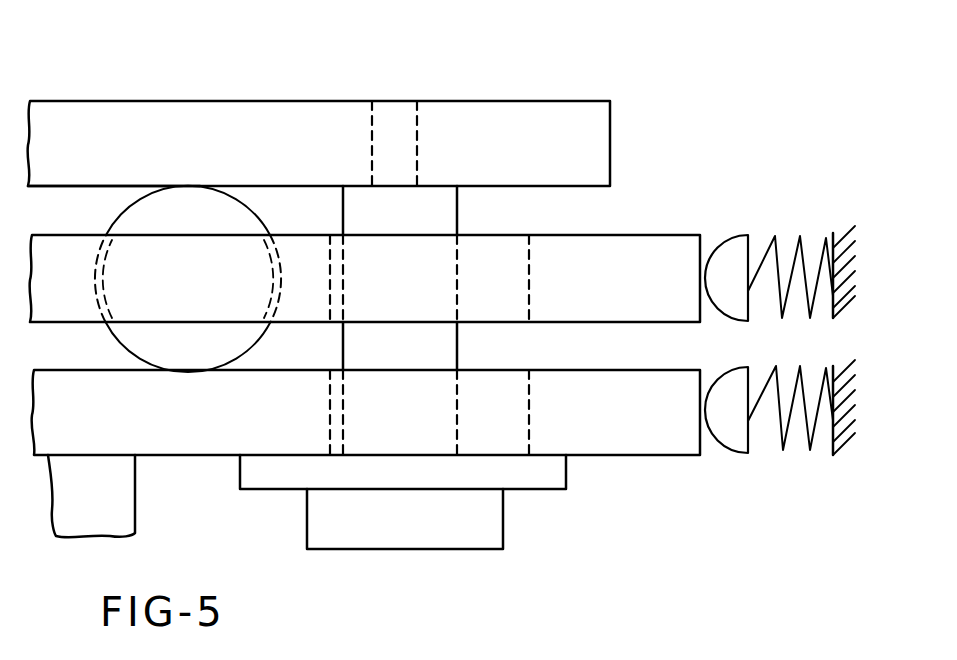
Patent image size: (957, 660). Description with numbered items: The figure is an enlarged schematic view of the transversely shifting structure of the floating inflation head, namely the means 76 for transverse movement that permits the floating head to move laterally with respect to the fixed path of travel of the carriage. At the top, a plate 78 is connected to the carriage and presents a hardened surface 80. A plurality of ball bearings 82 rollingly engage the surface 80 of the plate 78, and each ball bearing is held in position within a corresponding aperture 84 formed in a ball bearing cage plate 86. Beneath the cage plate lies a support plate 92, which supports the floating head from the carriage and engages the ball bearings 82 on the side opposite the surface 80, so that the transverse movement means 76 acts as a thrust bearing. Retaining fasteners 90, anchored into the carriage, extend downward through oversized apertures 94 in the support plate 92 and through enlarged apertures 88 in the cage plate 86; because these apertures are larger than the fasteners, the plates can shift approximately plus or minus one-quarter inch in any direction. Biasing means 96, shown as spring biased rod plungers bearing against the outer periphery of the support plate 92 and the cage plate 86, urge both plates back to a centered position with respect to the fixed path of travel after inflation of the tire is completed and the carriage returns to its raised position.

The means for transverse movement 76 is at (674, 139).
The plate 78 is at (503, 108).
The hardened surface 80 is at (70, 185).
The ball bearings 82 is at (242, 200).
The apertures 84 is at (93, 269).
The ball bearing cage plate 86 is at (587, 242).
The enlarged apertures 88 is at (532, 279).
The retaining fasteners 90 is at (447, 213).
The support plate 92 is at (187, 450).
The oversized apertures 94 is at (532, 405).
The biasing means 96 is at (734, 234).